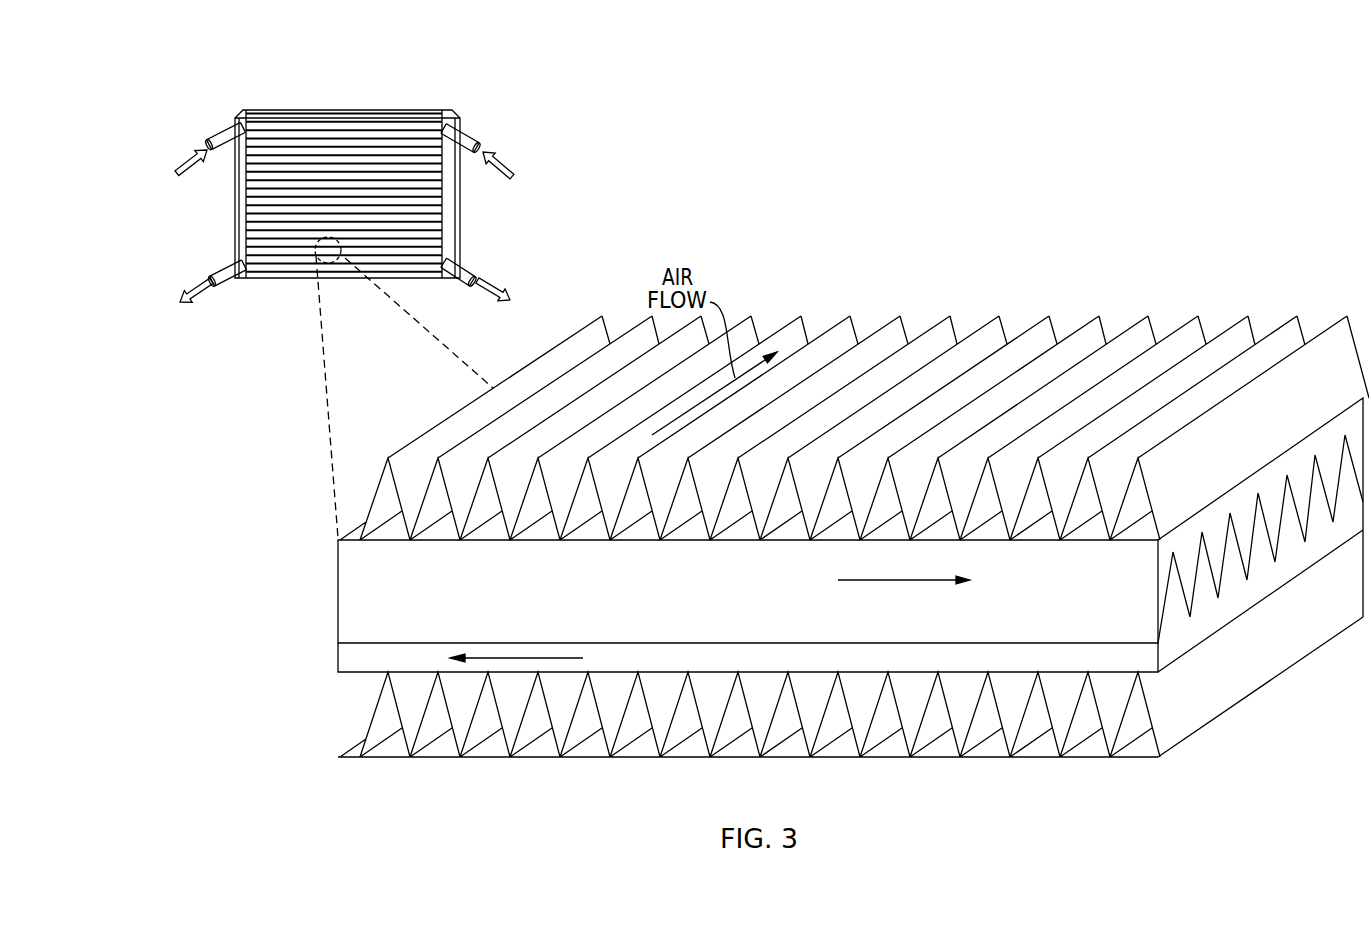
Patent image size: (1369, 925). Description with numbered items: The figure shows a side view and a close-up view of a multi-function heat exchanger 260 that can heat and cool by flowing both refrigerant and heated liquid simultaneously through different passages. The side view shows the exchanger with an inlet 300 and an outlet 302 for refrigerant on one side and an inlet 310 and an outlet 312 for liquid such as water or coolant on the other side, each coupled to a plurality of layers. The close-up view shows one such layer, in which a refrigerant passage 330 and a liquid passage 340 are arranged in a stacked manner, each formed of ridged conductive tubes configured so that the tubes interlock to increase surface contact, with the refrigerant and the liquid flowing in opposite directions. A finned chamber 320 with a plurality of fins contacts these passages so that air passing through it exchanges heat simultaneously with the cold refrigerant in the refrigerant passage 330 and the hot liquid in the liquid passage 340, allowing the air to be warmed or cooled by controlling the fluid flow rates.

The multi-function heat exchanger 260 is at (426, 70).
The refrigerant inlet 300 is at (212, 143).
The refrigerant outlet 302 is at (213, 266).
The liquid inlet 310 is at (470, 130).
The liquid outlet 312 is at (529, 221).
The finned chamber 320 is at (1052, 335).
The refrigerant passage 330 is at (880, 580).
The liquid passage 340 is at (528, 658).